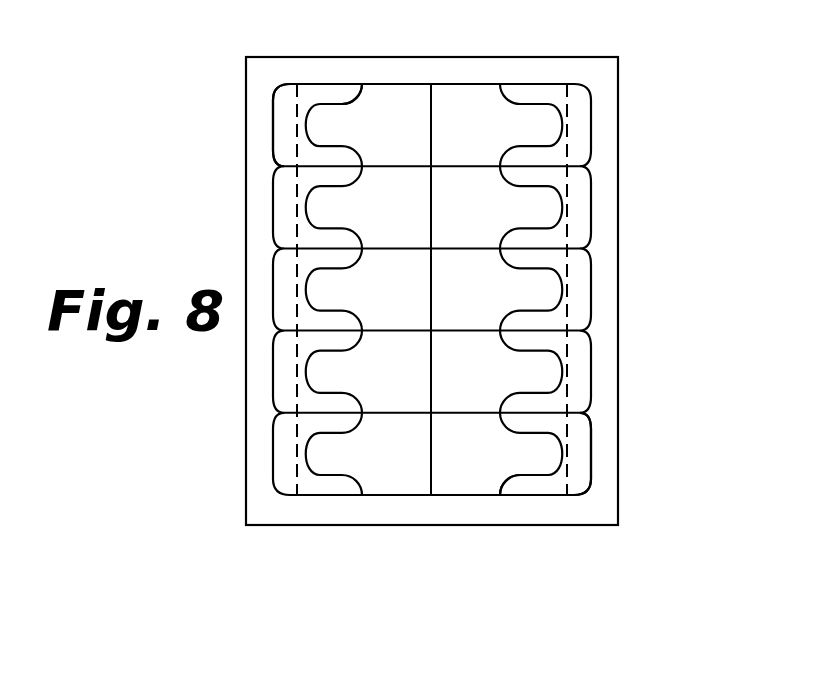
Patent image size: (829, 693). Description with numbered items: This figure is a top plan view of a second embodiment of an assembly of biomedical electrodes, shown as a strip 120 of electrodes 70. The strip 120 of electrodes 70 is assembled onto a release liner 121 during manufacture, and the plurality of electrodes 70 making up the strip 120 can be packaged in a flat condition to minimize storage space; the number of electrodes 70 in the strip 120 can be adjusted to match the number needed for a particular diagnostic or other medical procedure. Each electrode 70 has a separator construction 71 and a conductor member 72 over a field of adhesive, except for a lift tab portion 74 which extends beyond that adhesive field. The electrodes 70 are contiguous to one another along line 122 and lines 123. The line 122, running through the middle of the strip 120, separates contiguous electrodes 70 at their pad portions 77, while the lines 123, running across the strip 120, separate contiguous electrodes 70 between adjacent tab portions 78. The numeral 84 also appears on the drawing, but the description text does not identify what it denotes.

The strip 120 is at (318, 560).
The release liner 121 is at (280, 515).
The line 122 is at (434, 100).
The lines 123 is at (550, 247).
The electrode 70 is at (262, 115).
The separator construction 71 is at (321, 93).
The conductor member 72 is at (398, 96).
The lift tab portion 74 is at (282, 132).
The pad portion 77 is at (377, 112).
The tab portion 78 is at (316, 130).
The fold line 84 is at (303, 112).